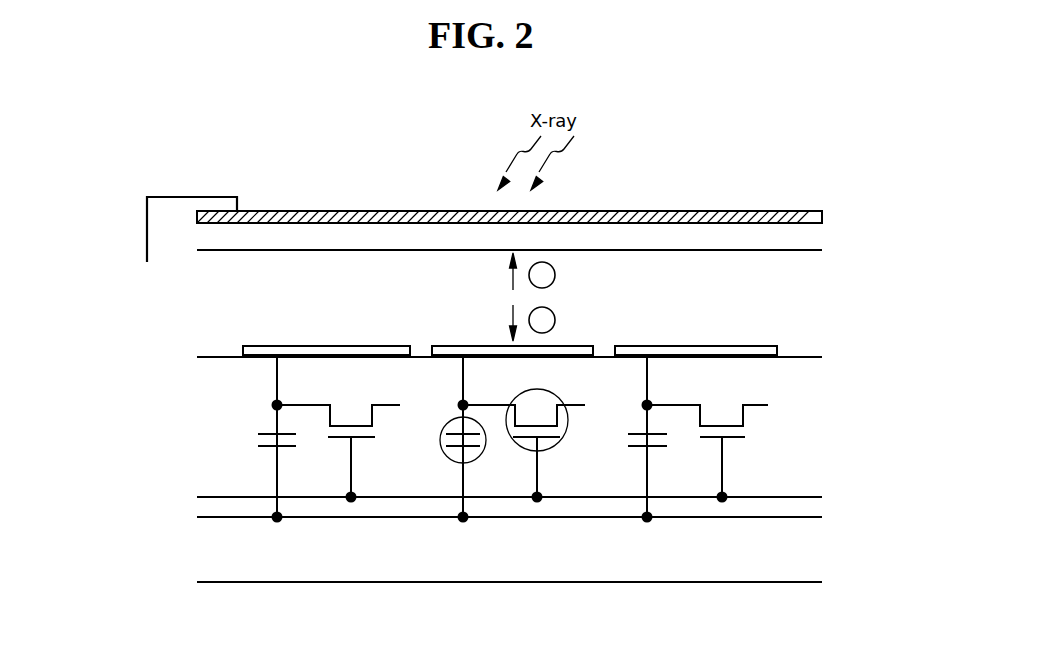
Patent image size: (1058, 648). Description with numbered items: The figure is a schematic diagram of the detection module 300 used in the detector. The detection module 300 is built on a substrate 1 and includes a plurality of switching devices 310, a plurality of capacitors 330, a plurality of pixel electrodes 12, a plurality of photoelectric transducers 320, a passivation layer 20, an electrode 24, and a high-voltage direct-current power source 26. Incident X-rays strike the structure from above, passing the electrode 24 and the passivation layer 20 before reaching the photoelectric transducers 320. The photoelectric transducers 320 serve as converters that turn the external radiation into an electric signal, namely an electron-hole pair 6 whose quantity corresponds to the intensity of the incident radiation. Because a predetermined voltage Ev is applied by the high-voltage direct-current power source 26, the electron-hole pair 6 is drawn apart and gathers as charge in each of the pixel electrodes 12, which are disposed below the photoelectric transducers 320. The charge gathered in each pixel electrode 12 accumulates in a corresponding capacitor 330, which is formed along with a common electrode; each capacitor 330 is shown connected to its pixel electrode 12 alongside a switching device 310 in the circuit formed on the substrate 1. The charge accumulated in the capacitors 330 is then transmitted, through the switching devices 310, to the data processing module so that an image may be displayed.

The detection module 300 is at (865, 160).
The substrate 1 is at (797, 550).
The electrode 24 is at (822, 216).
The passivation layer 20 is at (796, 232).
The photoelectric transducer 320 is at (797, 298).
The electron-hole pair 6 is at (555, 275).
The pixel electrode 12 is at (452, 346).
The high-voltage direct-current power source 26 is at (131, 274).
The capacitor 330 is at (450, 459).
The switching device 310 is at (558, 445).